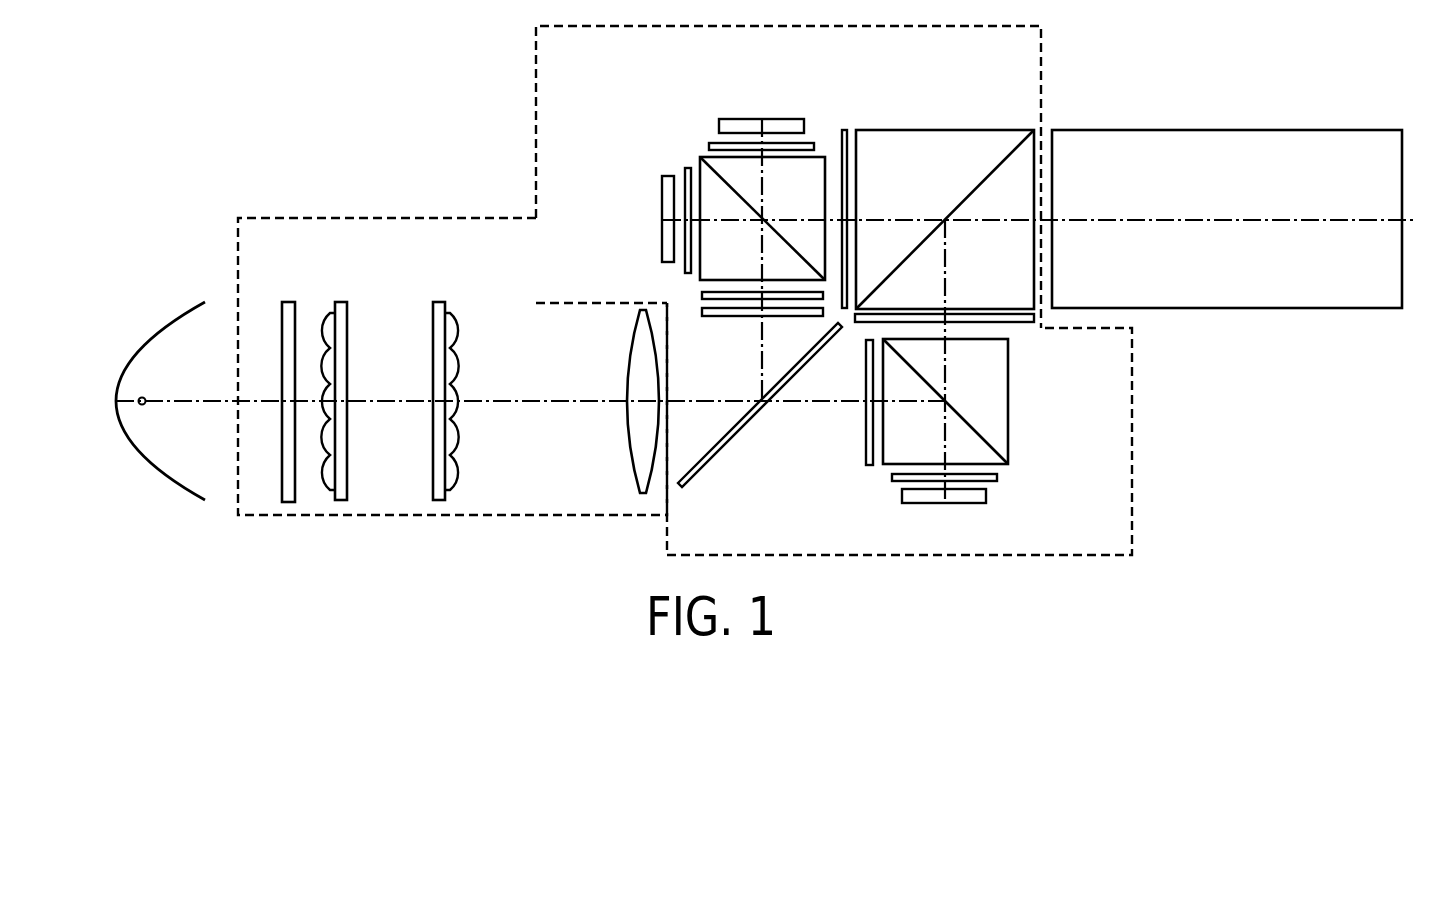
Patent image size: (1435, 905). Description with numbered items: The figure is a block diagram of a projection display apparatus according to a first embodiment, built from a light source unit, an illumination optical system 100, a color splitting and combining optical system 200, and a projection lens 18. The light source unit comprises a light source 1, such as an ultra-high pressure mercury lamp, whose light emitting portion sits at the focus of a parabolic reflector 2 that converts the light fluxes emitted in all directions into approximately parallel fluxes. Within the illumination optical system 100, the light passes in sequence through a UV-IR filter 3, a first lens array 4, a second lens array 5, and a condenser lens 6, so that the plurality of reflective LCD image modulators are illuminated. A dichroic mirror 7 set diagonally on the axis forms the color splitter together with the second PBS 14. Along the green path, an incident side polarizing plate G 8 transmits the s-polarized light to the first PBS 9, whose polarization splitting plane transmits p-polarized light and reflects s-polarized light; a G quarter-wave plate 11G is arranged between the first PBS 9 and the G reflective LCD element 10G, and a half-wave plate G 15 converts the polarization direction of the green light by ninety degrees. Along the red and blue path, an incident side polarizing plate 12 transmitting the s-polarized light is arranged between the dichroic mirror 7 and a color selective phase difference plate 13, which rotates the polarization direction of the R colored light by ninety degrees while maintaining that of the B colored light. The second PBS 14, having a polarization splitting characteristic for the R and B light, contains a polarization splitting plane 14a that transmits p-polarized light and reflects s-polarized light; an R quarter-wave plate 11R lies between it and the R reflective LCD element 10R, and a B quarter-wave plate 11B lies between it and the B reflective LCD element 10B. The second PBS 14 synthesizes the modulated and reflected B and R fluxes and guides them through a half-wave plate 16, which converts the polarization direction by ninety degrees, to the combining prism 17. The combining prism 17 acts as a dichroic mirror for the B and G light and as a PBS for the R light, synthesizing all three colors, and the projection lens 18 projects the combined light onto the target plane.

The light source 1 is at (143, 404).
The parabolic reflector 2 is at (172, 322).
The UV-IR filter 3 is at (292, 300).
The first lens array 4 is at (342, 300).
The second lens array 5 is at (447, 300).
The condenser lens 6 is at (640, 462).
The dichroic mirror 7 is at (707, 465).
The incident side polarizing plate G 8 is at (863, 415).
The first PBS 9 is at (987, 395).
The G reflective LCD element 10G is at (973, 498).
The R reflective LCD element 10R is at (739, 123).
The B reflective LCD element 10B is at (667, 235).
The G quarter-wave plate 11G is at (997, 477).
The R quarter-wave plate 11R is at (710, 145).
The B quarter-wave plate 11B is at (687, 173).
The incident side polarizing plate 12 is at (702, 313).
The color selective phase difference plate 13 is at (702, 295).
The second PBS 14 is at (815, 172).
The polarization splitting plane 14a is at (740, 200).
The half-wave plate G 15 is at (1027, 322).
The half-wave plate 16 is at (848, 127).
The combining prism 17 is at (963, 168).
The projection lens 18 is at (1070, 168).
The illumination optical system 100 is at (517, 493).
The color splitting and combining optical system 200 is at (1097, 448).